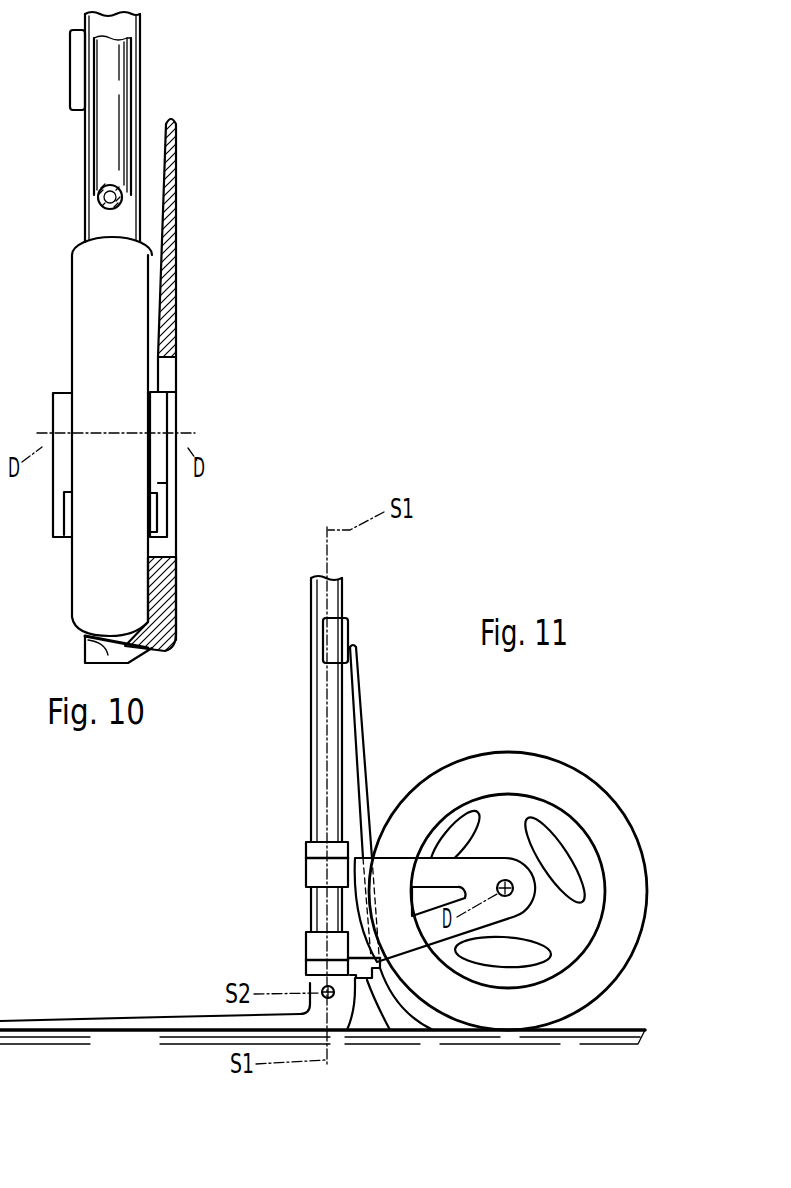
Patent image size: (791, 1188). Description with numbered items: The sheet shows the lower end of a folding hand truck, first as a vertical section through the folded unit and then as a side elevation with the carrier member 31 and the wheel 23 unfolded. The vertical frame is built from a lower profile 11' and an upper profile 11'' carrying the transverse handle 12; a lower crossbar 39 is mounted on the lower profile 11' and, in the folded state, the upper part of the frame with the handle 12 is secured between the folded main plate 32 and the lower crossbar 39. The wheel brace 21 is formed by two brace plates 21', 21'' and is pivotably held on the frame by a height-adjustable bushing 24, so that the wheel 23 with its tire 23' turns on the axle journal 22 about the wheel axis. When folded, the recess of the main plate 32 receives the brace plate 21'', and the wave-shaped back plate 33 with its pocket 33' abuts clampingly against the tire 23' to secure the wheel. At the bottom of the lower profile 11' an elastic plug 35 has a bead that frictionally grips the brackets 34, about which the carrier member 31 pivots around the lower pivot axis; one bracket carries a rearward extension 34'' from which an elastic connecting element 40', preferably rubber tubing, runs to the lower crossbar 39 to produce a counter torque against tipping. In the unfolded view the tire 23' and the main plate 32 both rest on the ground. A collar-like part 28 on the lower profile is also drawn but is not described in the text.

In FIG. 10, the lower profile 11' is at (137, 127).
In FIG. 11, the lower profile 11' is at (297, 709).
In FIG. 10, the upper profile 11'' is at (81, 115).
In FIG. 10, the transverse handle 12 is at (100, 180).
In FIG. 10, the lower crossbar 39 is at (70, 62).
In FIG. 11, the lower crossbar 39 is at (340, 632).
In FIG. 10, the wheel 23 is at (84, 436).
In FIG. 11, the wheel 23 is at (508, 891).
In FIG. 10, the tire 23' is at (114, 333).
In FIG. 11, the tire 23' is at (534, 776).
In FIG. 10, the main plate 32 is at (172, 245).
In FIG. 11, the main plate 32 is at (100, 1046).
In FIG. 10, the brace plate 21' is at (38, 458).
In FIG. 10, the brace plate 21'' is at (193, 464).
In FIG. 10, the pocket 33' is at (91, 651).
In FIG. 11, the elastic connecting element 40' is at (321, 801).
In FIG. 11, the wheel brace 21 is at (445, 843).
In FIG. 11, the axle journal 22 is at (511, 883).
In FIG. 11, the clamp collar 28 is at (318, 852).
In FIG. 11, the bushing 24 is at (318, 898).
In FIG. 11, the elastic plug 35 is at (310, 985).
In FIG. 11, the bracket 34 is at (352, 1028).
In FIG. 11, the back plate 33 is at (388, 1029).
In FIG. 11, the rearward extension 34'' is at (423, 1023).
In FIG. 11, the carrier member 31 is at (166, 1017).